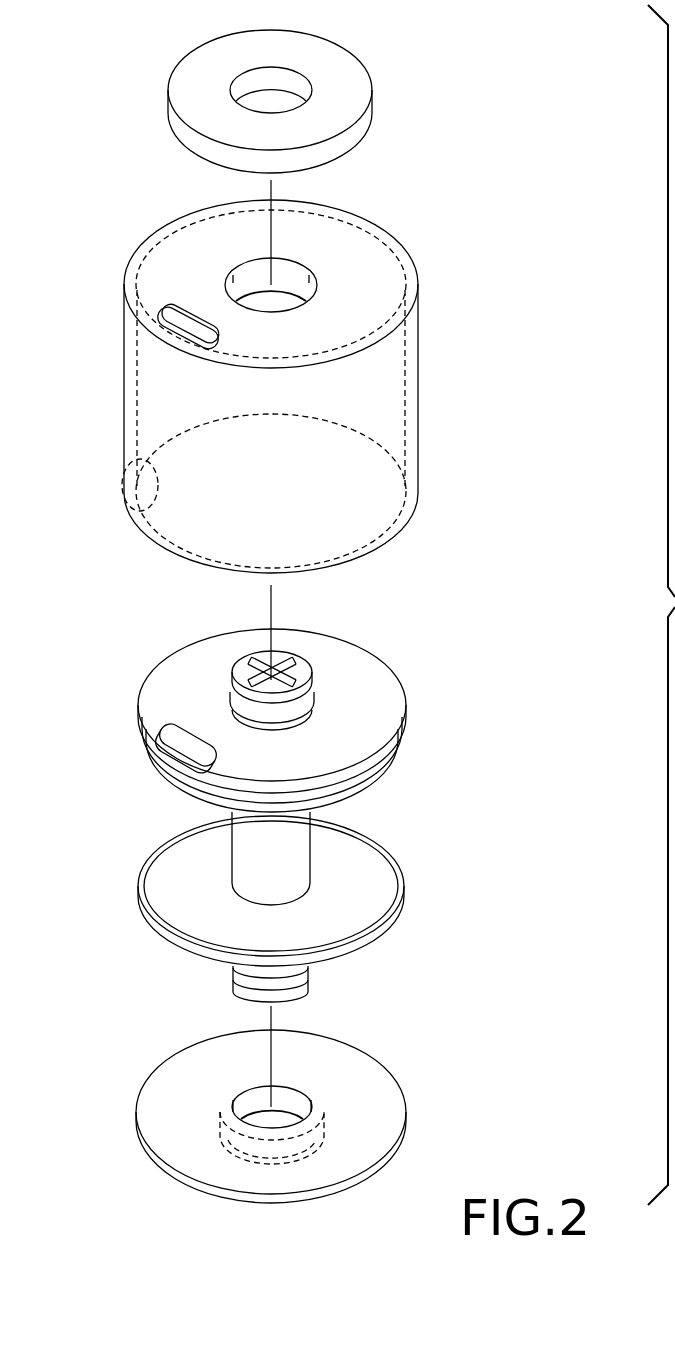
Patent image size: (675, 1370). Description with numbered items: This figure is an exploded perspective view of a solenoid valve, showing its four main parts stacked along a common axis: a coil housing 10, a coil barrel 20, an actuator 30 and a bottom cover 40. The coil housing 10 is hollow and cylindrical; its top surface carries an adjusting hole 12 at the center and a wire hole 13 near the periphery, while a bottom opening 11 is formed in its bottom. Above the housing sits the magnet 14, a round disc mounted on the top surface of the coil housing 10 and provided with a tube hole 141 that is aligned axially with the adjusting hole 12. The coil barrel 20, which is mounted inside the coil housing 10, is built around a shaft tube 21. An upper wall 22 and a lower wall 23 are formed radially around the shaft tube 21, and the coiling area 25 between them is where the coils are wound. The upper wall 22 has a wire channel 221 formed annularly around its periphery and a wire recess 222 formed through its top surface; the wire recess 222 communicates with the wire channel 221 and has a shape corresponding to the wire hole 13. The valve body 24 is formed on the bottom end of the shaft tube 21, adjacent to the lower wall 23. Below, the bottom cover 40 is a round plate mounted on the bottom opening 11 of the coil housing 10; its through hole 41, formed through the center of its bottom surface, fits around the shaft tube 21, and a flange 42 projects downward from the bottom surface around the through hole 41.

The coil housing 10 is at (440, 406).
The bottom opening 11 is at (142, 502).
The adjusting hole 12 is at (246, 283).
The wire hole 13 is at (172, 323).
The magnet 14 is at (368, 78).
The tube hole 141 is at (251, 80).
The coil barrel 20 is at (303, 813).
The shaft tube 21 is at (235, 847).
The upper wall 22 is at (168, 655).
The wire channel 221 is at (167, 768).
The wire recess 222 is at (172, 735).
The lower wall 23 is at (377, 880).
The valve body 24 is at (228, 994).
The coiling area 25 is at (350, 811).
The actuator 30 is at (312, 652).
The bottom cover 40 is at (132, 1085).
The through hole 41 is at (287, 1100).
The flange 42 is at (232, 1150).